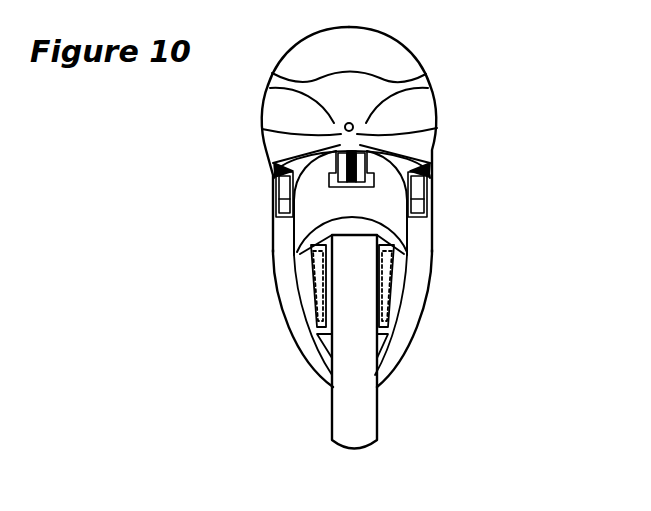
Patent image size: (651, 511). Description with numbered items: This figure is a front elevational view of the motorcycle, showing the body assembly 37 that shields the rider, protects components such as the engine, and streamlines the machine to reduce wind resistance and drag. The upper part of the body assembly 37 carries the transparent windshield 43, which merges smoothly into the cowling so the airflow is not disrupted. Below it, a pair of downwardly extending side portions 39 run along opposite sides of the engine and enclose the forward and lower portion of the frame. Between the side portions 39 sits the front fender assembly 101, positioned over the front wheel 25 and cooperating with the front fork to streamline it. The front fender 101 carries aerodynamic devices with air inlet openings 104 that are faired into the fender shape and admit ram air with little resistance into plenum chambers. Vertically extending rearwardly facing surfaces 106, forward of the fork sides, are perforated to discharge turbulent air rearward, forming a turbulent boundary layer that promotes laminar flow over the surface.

The front wheel 25 is at (370, 410).
The body assembly 37 is at (440, 117).
The side portions 39 is at (283, 300).
The windshield 43 is at (407, 58).
The front fender assembly 101 is at (343, 229).
The air inlet openings 104 is at (275, 222).
The rearwardly facing surfaces 106 is at (330, 325).